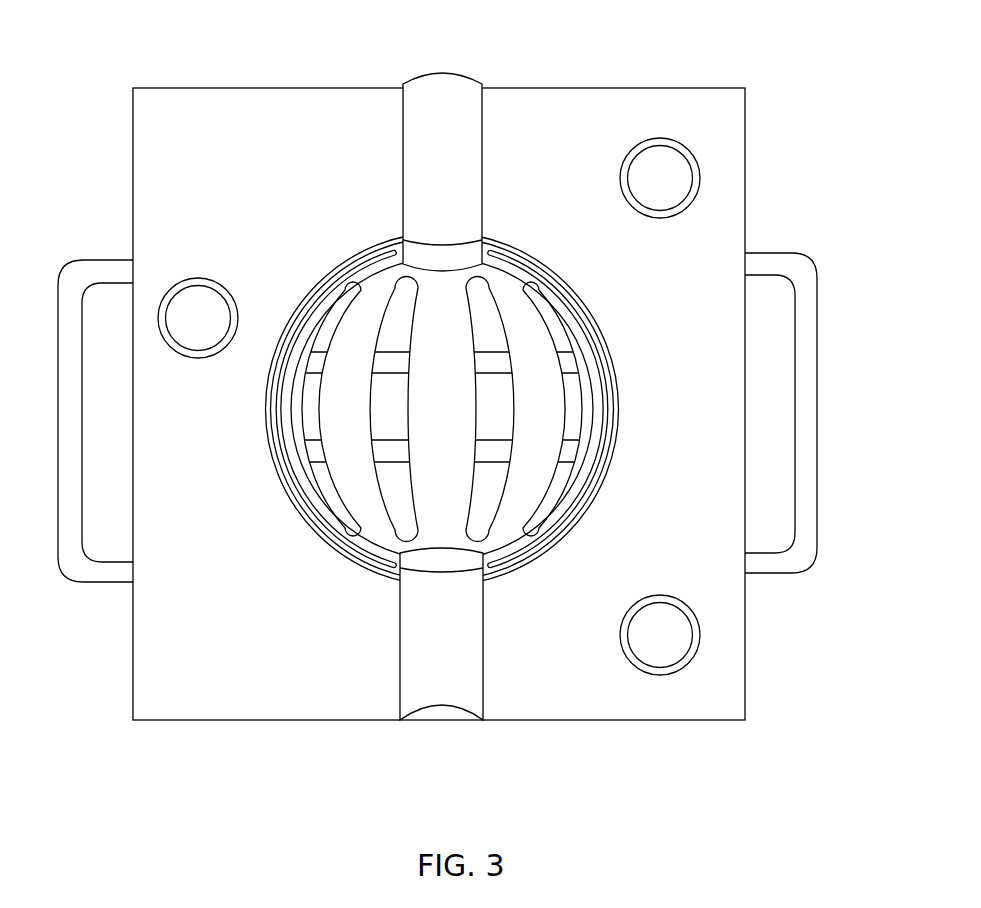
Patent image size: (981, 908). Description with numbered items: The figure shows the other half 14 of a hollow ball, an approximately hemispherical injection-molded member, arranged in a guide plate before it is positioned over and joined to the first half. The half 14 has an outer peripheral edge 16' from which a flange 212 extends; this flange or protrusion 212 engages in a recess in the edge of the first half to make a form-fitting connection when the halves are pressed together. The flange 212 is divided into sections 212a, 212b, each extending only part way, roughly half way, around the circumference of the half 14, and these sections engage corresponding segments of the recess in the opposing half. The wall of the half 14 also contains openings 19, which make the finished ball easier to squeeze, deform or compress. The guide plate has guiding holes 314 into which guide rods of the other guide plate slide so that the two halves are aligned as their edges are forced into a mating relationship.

The other half 14 is at (527, 565).
The outer peripheral edge 16' is at (439, 474).
The openings 19 is at (490, 338).
The flange 212 is at (597, 483).
The section of the flange 212a is at (323, 280).
The section of the flange 212b is at (517, 247).
The guiding holes 314 is at (702, 170).